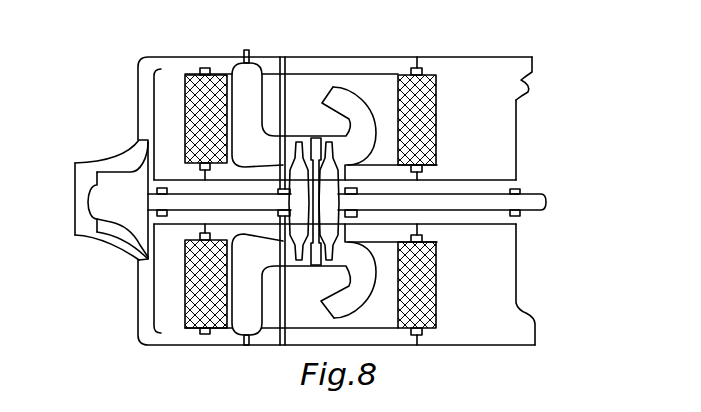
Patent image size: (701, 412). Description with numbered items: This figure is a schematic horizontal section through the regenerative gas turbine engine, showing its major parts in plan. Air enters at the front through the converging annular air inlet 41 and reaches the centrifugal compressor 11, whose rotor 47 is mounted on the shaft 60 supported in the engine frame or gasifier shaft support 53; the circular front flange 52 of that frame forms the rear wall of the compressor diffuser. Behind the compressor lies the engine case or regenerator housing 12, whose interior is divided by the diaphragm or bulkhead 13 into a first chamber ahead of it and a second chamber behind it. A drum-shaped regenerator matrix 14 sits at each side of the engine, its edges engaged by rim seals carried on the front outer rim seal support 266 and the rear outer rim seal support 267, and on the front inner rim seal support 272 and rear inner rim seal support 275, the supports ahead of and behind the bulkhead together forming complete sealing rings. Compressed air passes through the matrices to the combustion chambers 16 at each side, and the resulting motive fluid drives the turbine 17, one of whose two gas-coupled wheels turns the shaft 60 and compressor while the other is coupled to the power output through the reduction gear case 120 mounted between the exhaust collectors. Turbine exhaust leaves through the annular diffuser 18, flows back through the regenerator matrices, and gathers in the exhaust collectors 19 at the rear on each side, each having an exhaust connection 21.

The compressor 11 is at (117, 148).
The engine case or regenerator housing 12 is at (337, 58).
The diaphragm or bulkhead 13 is at (283, 83).
The regenerator matrix 14 is at (187, 77).
The combustion chamber 16 is at (254, 68).
The turbine 17 is at (316, 266).
The annular diffuser 18 is at (348, 305).
The exhaust collector 19 is at (495, 70).
The exhaust connection 21 is at (532, 77).
The converging annular air inlet 41 is at (88, 222).
The compressor rotor 47 is at (124, 228).
The front flange of the engine frame 52 is at (153, 312).
The engine frame or gasifier shaft support 53 is at (177, 183).
The shaft 60 is at (240, 223).
The reduction gear case 120 is at (458, 180).
The front outer rim seal support 266 is at (208, 68).
The rear outer rim seal support 267 is at (417, 57).
The front inner rim seal support 272 is at (197, 233).
The rear inner rim seal support 275 is at (417, 232).